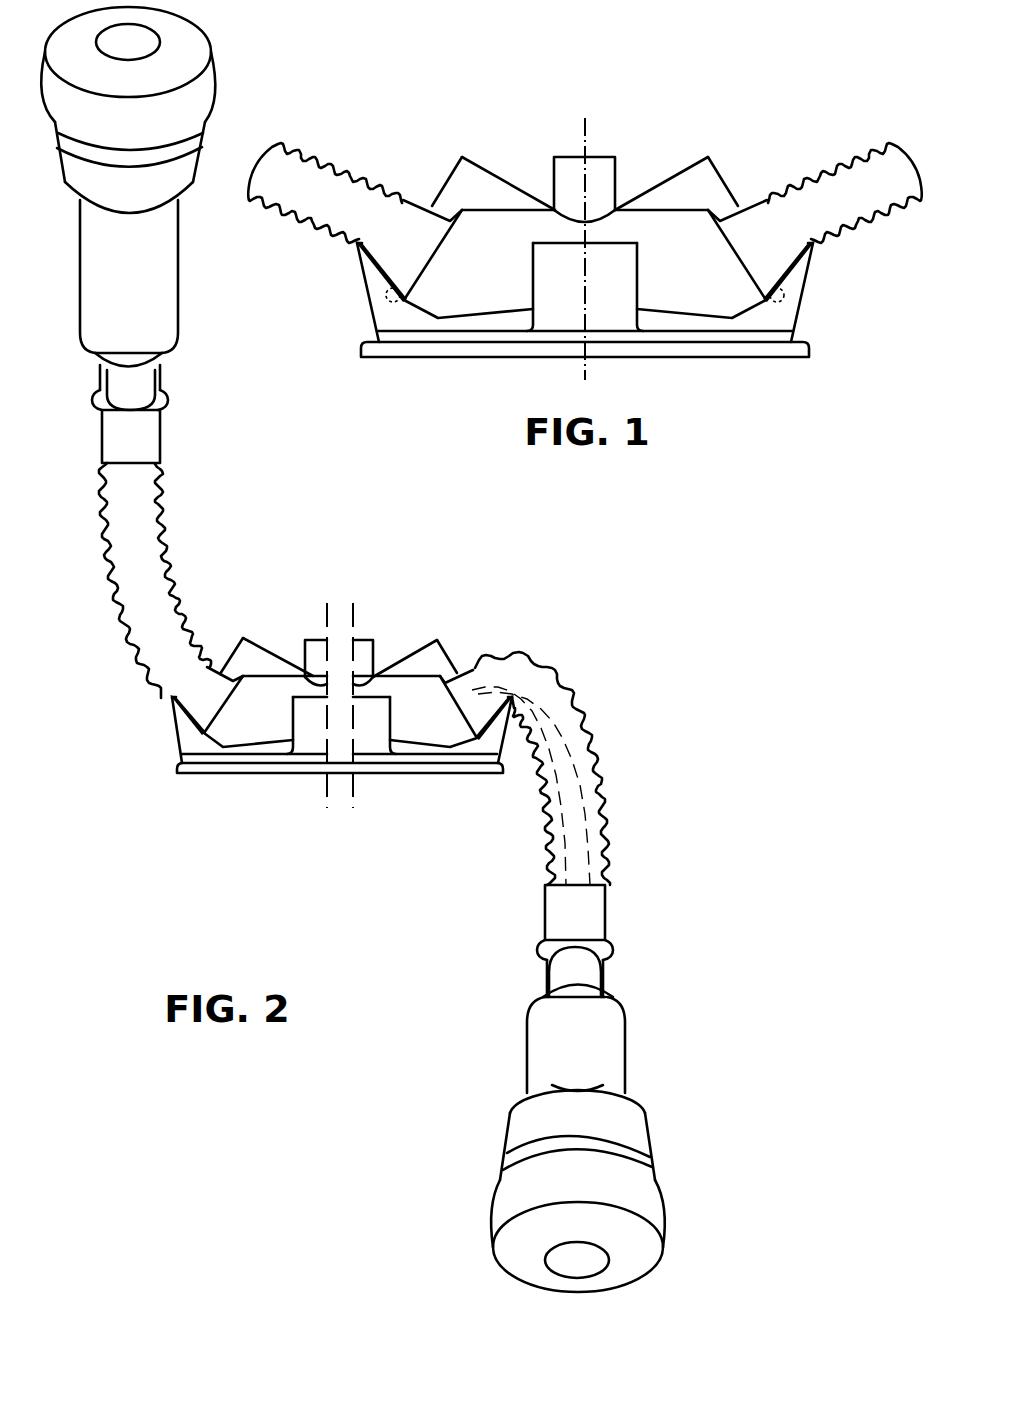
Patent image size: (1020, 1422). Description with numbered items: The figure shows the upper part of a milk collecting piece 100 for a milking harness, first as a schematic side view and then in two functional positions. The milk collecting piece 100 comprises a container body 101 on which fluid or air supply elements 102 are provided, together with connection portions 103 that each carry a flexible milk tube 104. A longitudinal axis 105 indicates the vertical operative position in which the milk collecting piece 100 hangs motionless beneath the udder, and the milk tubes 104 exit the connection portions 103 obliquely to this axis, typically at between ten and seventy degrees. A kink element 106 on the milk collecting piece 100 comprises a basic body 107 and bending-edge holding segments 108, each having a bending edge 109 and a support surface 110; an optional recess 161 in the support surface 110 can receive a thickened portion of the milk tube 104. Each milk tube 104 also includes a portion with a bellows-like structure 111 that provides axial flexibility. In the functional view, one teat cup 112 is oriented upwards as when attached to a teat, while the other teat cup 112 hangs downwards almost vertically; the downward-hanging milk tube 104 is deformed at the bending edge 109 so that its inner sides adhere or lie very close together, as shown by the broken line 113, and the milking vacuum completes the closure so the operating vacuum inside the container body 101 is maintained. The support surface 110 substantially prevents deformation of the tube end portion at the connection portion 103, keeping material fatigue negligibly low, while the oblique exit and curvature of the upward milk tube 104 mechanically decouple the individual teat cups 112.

In FIG. 1, the milk collecting piece 100 is at (648, 86).
In FIG. 1, the container body 101 is at (500, 225).
In FIG. 2, the container body 101 is at (340, 711).
In FIG. 1, the fluid or air supply element 102 is at (455, 190).
In FIG. 2, the fluid or air supply element 102 is at (440, 660).
In FIG. 1, the connection portion 103 is at (430, 258).
In FIG. 2, the connection portion 103 is at (222, 710).
In FIG. 1, the flexible milk tube 104 is at (805, 205).
In FIG. 2, the flexible milk tube 104 is at (182, 645).
In FIG. 1, the longitudinal axis 105 is at (587, 140).
In FIG. 2, the longitudinal axis 105 is at (339, 662).
In FIG. 1, the kink element 106 is at (370, 331).
In FIG. 2, the kink element 106 is at (170, 765).
In FIG. 1, the basic body 107 is at (802, 340).
In FIG. 2, the basic body 107 is at (474, 773).
In FIG. 1, the bending-edge holding segment 108 is at (545, 291).
In FIG. 2, the bending-edge holding segment 108 is at (195, 748).
In FIG. 1, the bending edge 109 is at (355, 244).
In FIG. 2, the bending edge 109 is at (170, 697).
In FIG. 1, the support surface 110 is at (378, 270).
In FIG. 2, the support surface 110 is at (178, 718).
In FIG. 1, the bellows-like structure 111 is at (338, 170).
In FIG. 2, the bellows-like structure 111 is at (553, 695).
In FIG. 2, the teat cup 112 is at (113, 318).
In FIG. 2, the broken line 113 is at (585, 782).
In FIG. 1, the recess 161 is at (398, 303).